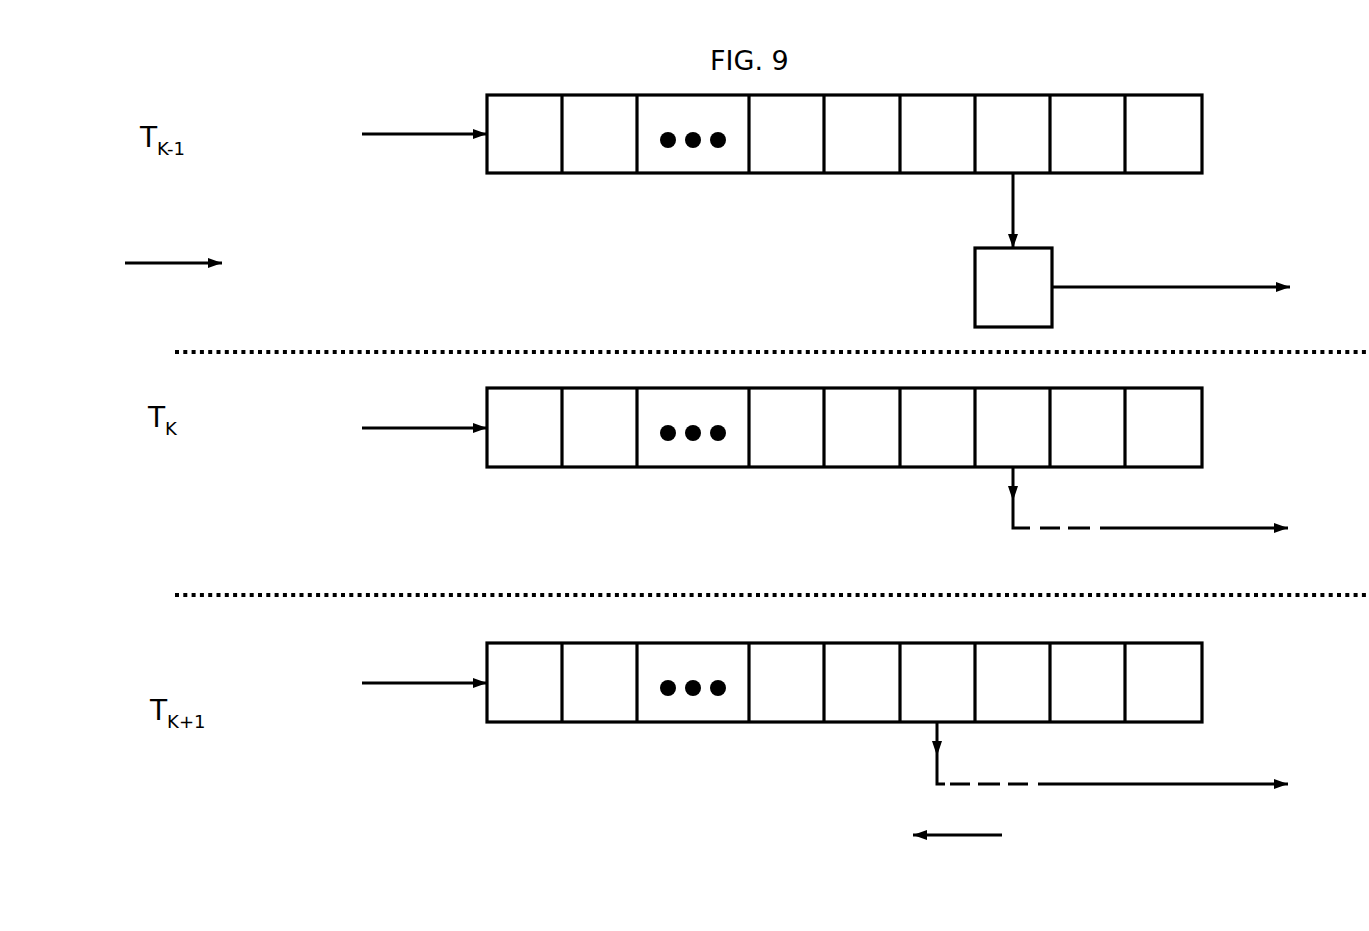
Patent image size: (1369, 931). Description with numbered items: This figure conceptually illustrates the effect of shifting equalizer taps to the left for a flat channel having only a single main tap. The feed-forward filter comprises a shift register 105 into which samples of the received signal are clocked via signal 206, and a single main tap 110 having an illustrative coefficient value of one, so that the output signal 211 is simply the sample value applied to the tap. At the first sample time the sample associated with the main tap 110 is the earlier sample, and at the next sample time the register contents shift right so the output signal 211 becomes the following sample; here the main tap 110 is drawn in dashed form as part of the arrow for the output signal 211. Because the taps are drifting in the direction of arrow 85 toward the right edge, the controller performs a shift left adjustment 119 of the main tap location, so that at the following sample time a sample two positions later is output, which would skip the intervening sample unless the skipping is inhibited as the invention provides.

The arrow 85 is at (187, 275).
The shift register 105 is at (500, 187).
The main tap 110 is at (965, 287).
The shift left adjustment 119 is at (900, 823).
The signal 206 is at (387, 148).
The output signal 211 is at (1240, 270).